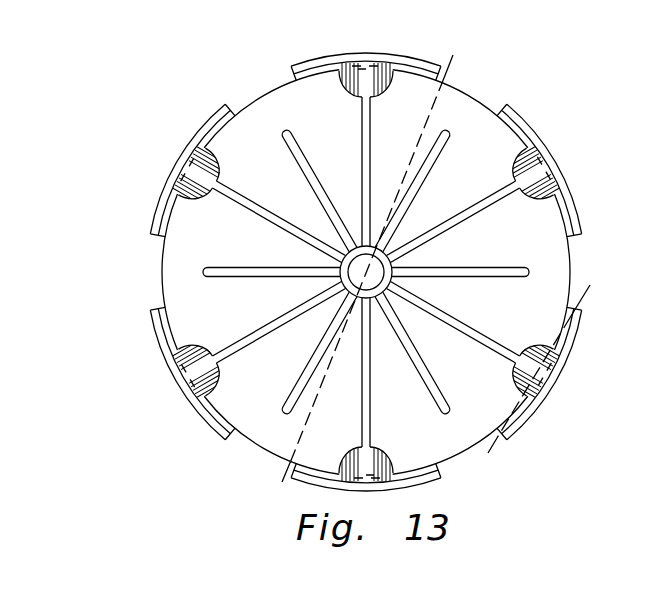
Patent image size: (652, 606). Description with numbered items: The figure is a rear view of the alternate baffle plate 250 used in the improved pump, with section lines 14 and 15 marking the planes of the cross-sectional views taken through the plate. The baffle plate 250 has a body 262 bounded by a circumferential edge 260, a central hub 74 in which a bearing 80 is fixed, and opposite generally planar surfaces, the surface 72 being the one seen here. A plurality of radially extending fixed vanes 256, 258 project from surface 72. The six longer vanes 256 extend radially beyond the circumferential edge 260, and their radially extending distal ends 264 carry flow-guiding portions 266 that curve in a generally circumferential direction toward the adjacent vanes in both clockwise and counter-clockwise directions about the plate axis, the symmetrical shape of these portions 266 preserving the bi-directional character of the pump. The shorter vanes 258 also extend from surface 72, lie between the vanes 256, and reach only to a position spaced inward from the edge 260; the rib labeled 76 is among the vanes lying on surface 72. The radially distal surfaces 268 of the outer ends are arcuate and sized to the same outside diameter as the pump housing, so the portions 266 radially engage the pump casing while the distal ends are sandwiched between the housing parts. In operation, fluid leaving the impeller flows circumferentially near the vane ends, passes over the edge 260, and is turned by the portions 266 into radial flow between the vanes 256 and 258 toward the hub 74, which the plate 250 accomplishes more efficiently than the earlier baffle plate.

The section line 14- 14 is at (453, 55).
The section line 15- 15 is at (590, 285).
The planar surface 72 is at (226, 309).
The central hub 74 is at (409, 281).
The radial rib 76 is at (398, 304).
The bearing 80 is at (397, 231).
The alternate baffle plate 250 is at (181, 422).
The fixed vanes 256 is at (290, 203).
The fixed vanes 258 is at (302, 168).
The circumferential edge 260 is at (470, 100).
The body 262 is at (537, 176).
The distal ends 264 is at (524, 142).
The flow-guiding portions 266 is at (528, 122).
The radially distal surfaces 268 is at (213, 238).